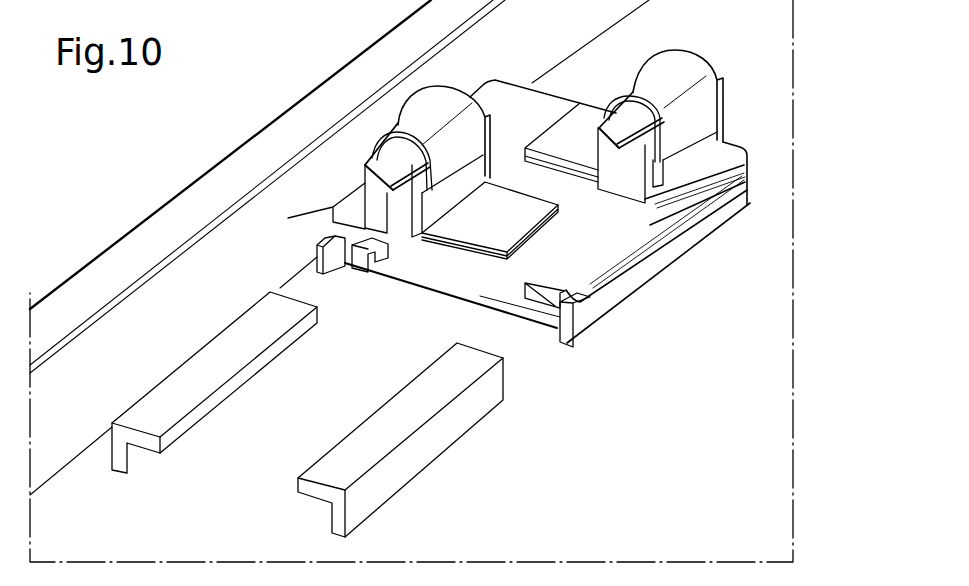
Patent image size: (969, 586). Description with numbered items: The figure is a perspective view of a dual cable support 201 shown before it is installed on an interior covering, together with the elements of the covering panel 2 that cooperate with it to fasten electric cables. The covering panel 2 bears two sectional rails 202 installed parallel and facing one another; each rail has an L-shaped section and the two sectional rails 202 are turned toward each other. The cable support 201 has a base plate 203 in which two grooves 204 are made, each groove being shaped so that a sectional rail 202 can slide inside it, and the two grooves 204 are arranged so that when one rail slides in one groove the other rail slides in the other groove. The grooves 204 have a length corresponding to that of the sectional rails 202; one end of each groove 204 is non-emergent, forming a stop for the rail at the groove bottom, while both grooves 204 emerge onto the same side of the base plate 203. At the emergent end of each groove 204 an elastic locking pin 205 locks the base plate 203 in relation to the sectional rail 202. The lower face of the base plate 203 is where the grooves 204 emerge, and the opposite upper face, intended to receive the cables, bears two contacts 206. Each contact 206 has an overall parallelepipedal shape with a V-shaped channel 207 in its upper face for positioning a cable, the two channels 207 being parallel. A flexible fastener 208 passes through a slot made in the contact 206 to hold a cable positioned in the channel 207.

The covering panel 2 is at (760, 338).
The cable support 201 is at (768, 157).
The sectional rails 202 is at (204, 367).
The base plate 203 is at (472, 287).
The grooves 204 is at (368, 246).
The elastic locking pin 205 is at (322, 236).
The contacts 206 is at (380, 195).
The V-shaped channel 207 is at (388, 182).
The flexible fastener 208 is at (440, 103).